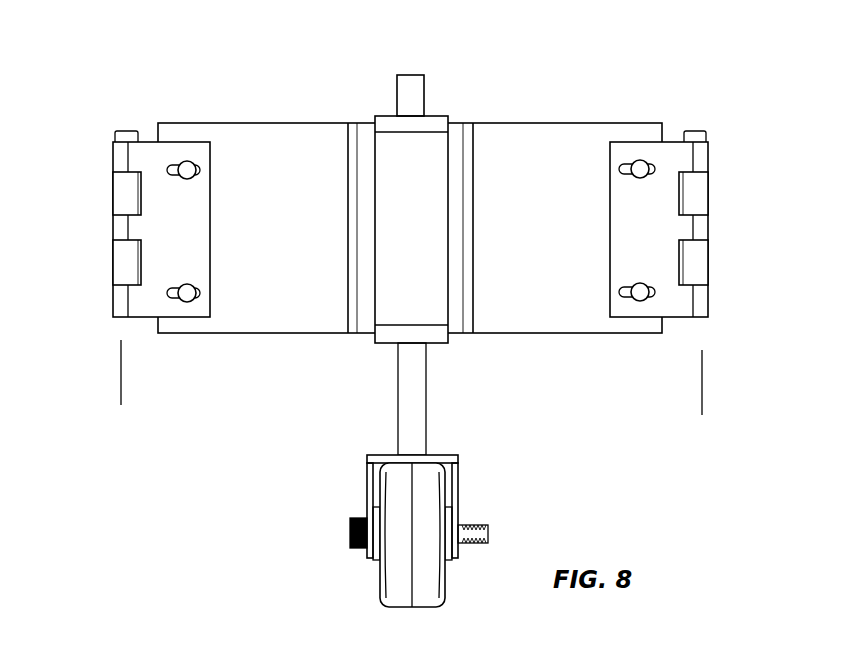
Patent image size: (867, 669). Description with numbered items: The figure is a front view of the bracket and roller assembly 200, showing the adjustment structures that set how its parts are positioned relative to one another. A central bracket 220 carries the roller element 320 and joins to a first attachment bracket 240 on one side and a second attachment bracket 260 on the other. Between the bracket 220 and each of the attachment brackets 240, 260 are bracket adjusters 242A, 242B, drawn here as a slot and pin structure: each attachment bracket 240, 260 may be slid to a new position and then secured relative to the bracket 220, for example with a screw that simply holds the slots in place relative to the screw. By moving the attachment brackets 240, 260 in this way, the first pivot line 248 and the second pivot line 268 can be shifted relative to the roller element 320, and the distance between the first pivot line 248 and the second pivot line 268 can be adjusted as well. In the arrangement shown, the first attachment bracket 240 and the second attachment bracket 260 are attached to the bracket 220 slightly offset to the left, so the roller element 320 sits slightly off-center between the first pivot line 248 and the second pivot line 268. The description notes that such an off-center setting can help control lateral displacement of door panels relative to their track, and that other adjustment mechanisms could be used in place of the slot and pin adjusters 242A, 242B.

The bracket and roller assembly 200 is at (470, 57).
The bracket 220 is at (305, 123).
The first attachment bracket 240 is at (113, 201).
The second attachment bracket 260 is at (708, 195).
The bracket adjuster 242A is at (172, 162).
The bracket adjuster 242B is at (188, 160).
The first pivot line 248 is at (121, 398).
The second pivot line 268 is at (702, 411).
The roller element 320 is at (380, 578).